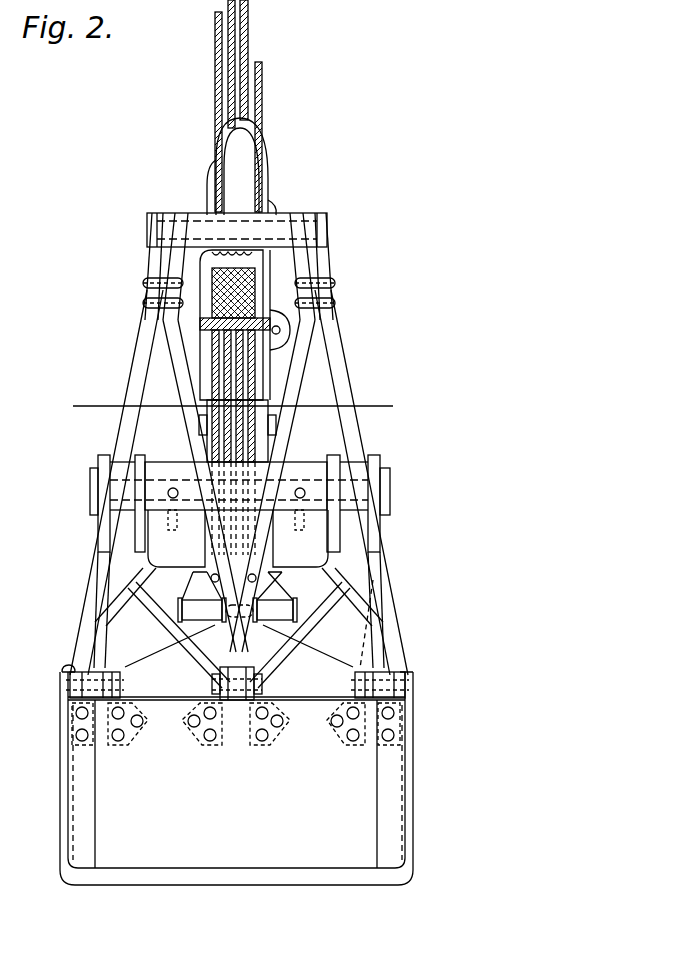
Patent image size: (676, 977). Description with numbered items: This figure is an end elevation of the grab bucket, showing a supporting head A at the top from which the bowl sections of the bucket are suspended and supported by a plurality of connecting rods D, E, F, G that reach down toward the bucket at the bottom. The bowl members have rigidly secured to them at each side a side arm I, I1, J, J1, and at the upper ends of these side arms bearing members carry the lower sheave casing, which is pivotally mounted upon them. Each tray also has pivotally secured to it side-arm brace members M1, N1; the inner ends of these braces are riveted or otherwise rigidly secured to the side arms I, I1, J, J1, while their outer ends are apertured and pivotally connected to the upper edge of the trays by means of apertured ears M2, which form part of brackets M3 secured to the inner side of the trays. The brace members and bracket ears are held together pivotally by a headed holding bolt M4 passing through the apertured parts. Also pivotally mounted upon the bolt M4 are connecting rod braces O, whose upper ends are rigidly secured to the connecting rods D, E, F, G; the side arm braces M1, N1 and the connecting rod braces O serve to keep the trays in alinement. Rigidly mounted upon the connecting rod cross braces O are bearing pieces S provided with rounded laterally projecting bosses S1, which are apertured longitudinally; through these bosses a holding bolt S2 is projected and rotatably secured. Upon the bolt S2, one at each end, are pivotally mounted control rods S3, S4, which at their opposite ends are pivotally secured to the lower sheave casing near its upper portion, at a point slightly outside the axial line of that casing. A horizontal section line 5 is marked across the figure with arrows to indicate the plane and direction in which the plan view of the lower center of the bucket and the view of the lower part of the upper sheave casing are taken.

The supporting head A is at (282, 210).
The connecting rod F is at (157, 262).
The connecting rod G is at (318, 263).
The connecting rod D is at (152, 345).
The connecting rod E is at (318, 323).
The connecting rod brace O is at (177, 362).
The section line 5- 5 is at (88, 382).
The control rod S4 is at (290, 458).
The control rod S3 is at (187, 540).
The holding bolt S2 is at (306, 584).
The rounded laterally projecting boss S1 is at (237, 597).
The bearing piece S is at (152, 658).
The side arm I is at (76, 628).
The side arm I1 is at (99, 632).
The side arm J is at (390, 608).
The side arm J1 is at (383, 580).
The side-arm brace member N1 is at (298, 652).
The side-arm brace member M1 is at (114, 672).
The apertured ear M2 is at (272, 663).
The bracket M3 is at (198, 745).
The headed holding bolt M4 is at (212, 678).